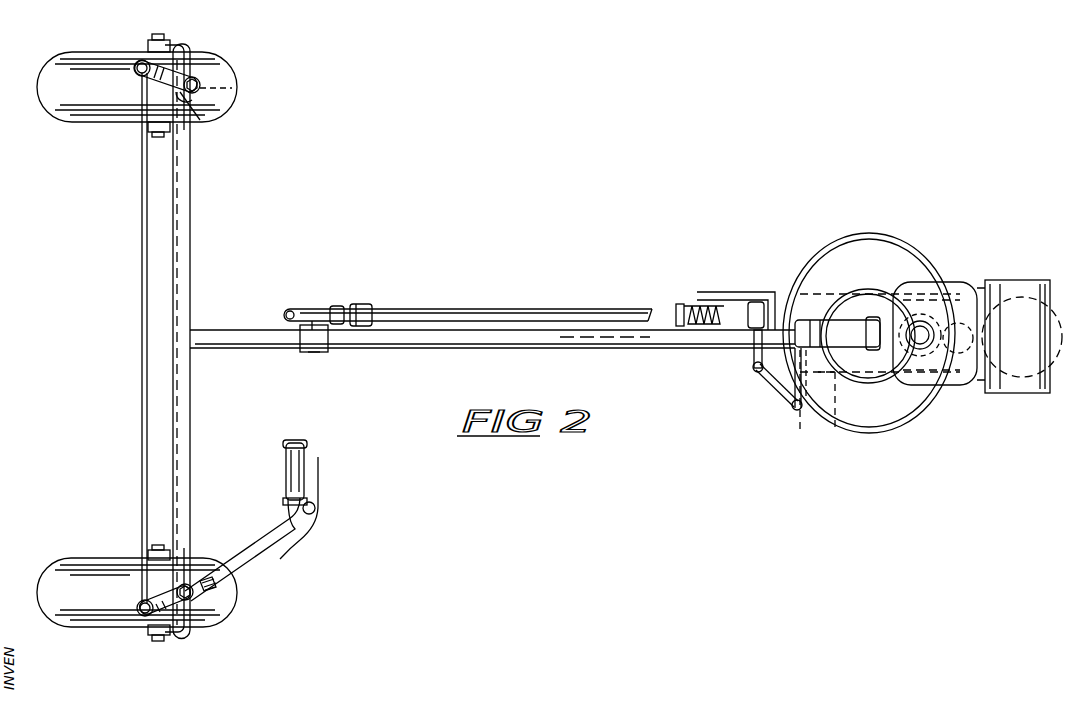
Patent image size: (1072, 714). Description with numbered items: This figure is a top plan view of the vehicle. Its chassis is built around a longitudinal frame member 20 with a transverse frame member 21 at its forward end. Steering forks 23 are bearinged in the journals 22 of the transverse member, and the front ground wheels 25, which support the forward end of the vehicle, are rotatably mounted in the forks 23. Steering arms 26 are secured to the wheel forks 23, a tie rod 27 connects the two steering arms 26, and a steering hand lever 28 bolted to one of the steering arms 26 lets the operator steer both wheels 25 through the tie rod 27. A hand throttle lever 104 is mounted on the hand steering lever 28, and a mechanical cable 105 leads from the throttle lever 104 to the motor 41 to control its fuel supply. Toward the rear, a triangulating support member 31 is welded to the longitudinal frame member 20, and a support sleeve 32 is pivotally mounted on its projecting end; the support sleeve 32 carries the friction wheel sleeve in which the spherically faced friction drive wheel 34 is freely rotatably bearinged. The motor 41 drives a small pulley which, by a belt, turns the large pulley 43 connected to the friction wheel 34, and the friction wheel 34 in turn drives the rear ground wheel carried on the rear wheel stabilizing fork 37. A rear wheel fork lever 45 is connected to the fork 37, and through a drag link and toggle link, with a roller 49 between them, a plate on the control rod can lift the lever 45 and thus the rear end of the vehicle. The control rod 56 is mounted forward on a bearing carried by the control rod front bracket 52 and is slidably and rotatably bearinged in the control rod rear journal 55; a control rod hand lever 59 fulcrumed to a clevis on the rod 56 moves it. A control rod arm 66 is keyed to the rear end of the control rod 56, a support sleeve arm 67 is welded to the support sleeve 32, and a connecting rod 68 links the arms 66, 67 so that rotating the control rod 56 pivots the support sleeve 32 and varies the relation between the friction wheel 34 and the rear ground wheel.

The longitudinal frame member 20 is at (413, 345).
The transverse frame member 21 is at (192, 229).
The journals 22 is at (186, 100).
The steering forks 23 is at (165, 38).
The front ground wheels 25 is at (226, 71).
The steering arms 26 is at (188, 76).
The tie rod 27 is at (140, 190).
The steering hand lever 28 is at (268, 555).
The triangulating support member 31 is at (608, 346).
The support sleeve 32 is at (858, 318).
The spherically faced friction drive wheel 34 is at (922, 252).
The rear wheel stabilizing fork 37 is at (848, 424).
The motor 41 is at (975, 284).
The large pulley 43 is at (866, 380).
The rear wheel fork lever 45 is at (771, 292).
The roller 49 is at (686, 302).
The control rod front bracket 52 is at (288, 328).
The control rod rear journal 55 is at (752, 302).
The control rod 56 is at (548, 309).
The control rod hand lever 59 is at (360, 304).
The control rod arm 66 is at (812, 414).
The support sleeve arm 67 is at (755, 357).
The connecting rod 68 is at (776, 386).
The hand throttle lever 104 is at (320, 490).
The mechanical cable 105 is at (302, 545).